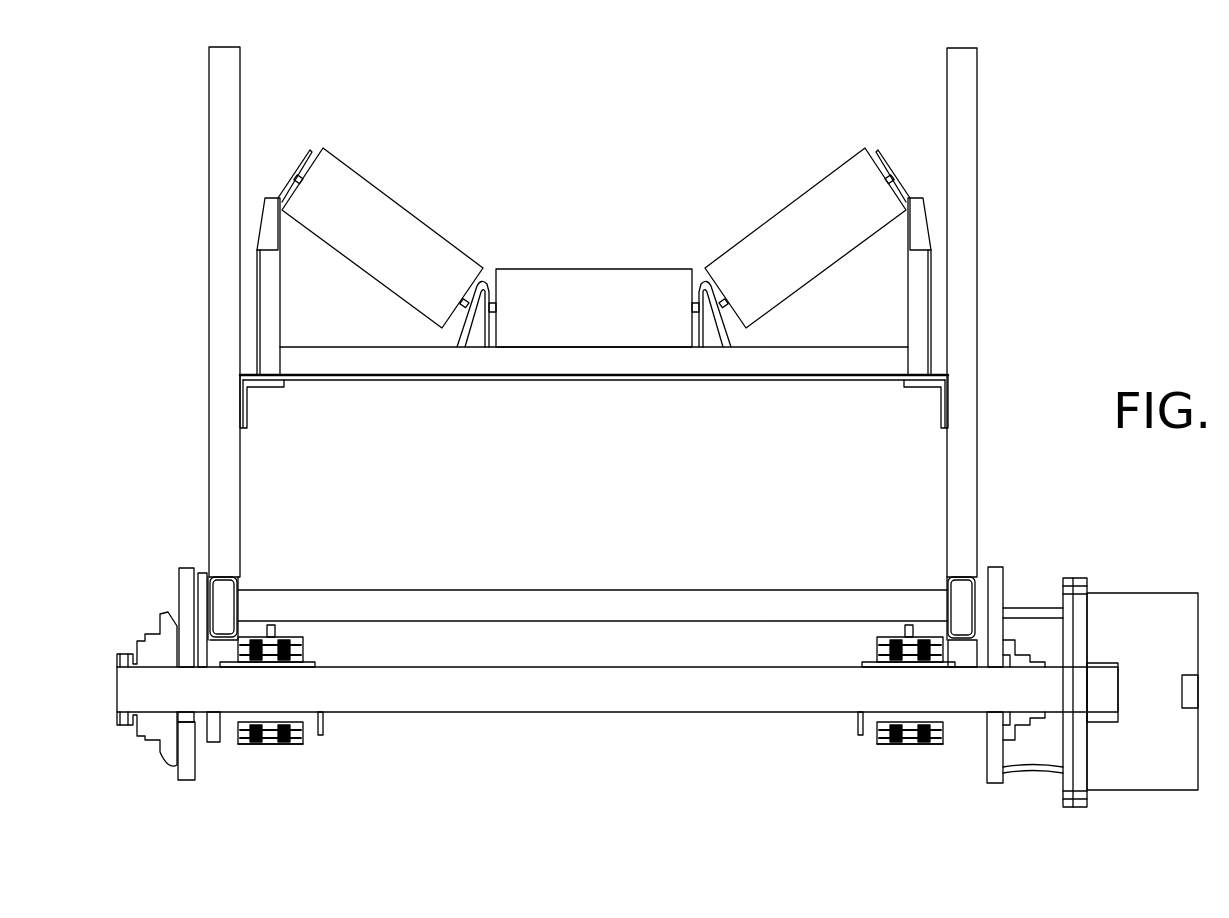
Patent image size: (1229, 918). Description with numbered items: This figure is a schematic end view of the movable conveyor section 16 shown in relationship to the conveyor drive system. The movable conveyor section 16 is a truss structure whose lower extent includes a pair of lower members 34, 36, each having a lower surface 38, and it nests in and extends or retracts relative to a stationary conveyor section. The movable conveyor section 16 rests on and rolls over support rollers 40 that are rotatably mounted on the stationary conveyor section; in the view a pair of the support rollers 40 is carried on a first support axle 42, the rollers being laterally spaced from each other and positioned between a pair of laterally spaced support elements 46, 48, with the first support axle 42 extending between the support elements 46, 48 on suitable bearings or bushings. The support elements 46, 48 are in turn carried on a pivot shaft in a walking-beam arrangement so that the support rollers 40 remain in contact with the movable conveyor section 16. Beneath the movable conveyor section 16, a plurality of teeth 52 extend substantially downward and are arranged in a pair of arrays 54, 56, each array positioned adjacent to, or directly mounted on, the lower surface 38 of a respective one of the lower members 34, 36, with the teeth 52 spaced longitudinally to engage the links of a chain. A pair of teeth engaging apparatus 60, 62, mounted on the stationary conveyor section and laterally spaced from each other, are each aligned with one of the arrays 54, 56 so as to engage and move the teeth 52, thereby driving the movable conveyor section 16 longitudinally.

The movable conveyor section 16 is at (1012, 252).
The lower member 34 is at (221, 577).
The lower member 36 is at (957, 575).
The lower surface 38 is at (218, 640).
The support roller 40 is at (215, 640).
The first support axle 42 is at (498, 697).
The support element 46 is at (188, 588).
The support element 48 is at (995, 590).
The teeth 52 is at (295, 632).
The array of teeth 54 is at (272, 614).
The array of teeth 56 is at (908, 613).
The teeth engaging apparatus 60 is at (343, 755).
The teeth engaging apparatus 62 is at (845, 737).